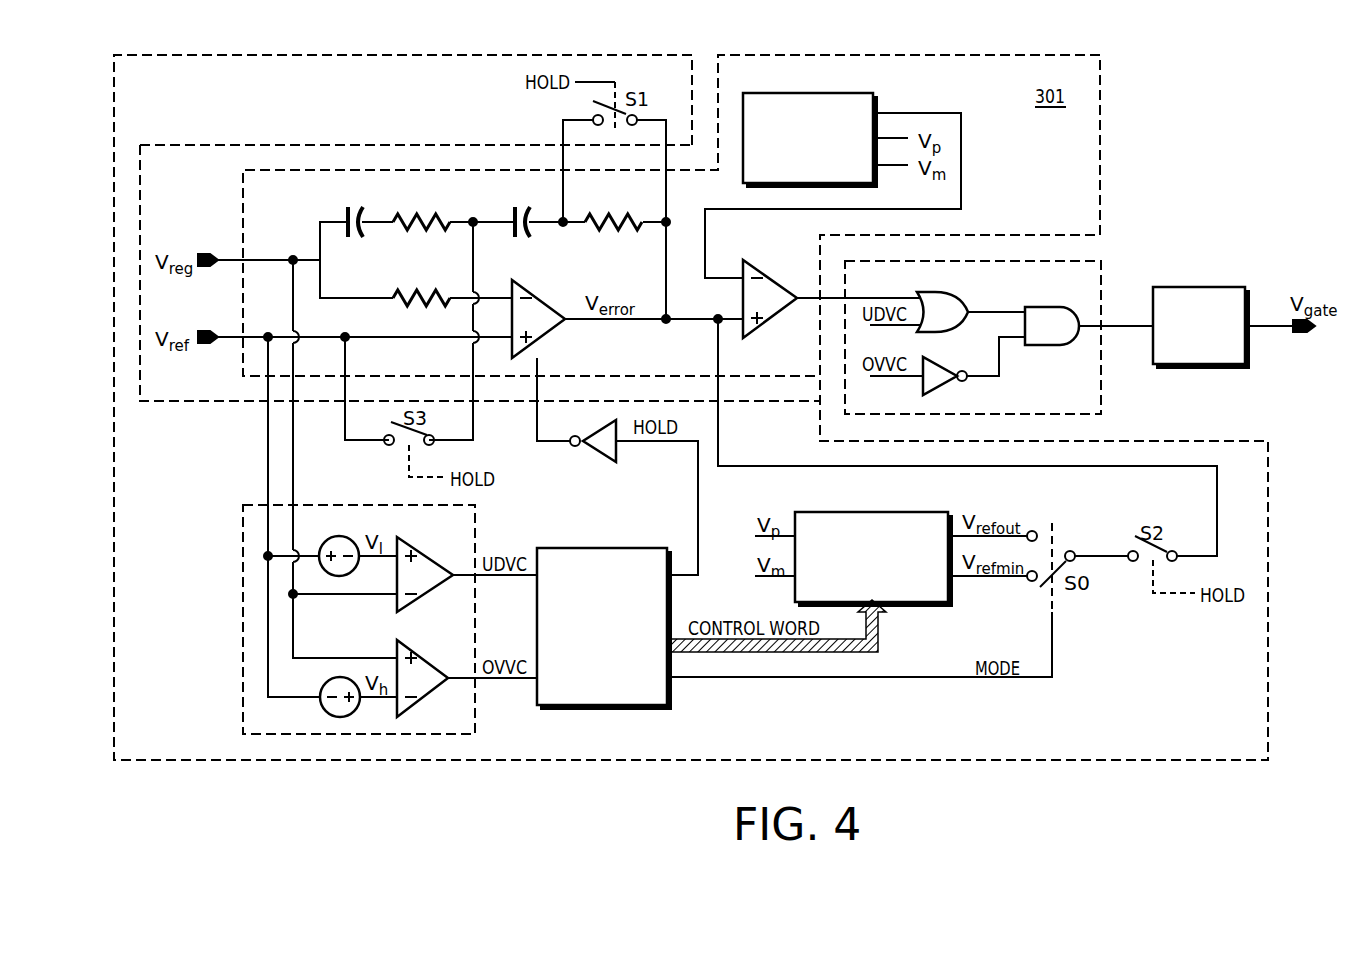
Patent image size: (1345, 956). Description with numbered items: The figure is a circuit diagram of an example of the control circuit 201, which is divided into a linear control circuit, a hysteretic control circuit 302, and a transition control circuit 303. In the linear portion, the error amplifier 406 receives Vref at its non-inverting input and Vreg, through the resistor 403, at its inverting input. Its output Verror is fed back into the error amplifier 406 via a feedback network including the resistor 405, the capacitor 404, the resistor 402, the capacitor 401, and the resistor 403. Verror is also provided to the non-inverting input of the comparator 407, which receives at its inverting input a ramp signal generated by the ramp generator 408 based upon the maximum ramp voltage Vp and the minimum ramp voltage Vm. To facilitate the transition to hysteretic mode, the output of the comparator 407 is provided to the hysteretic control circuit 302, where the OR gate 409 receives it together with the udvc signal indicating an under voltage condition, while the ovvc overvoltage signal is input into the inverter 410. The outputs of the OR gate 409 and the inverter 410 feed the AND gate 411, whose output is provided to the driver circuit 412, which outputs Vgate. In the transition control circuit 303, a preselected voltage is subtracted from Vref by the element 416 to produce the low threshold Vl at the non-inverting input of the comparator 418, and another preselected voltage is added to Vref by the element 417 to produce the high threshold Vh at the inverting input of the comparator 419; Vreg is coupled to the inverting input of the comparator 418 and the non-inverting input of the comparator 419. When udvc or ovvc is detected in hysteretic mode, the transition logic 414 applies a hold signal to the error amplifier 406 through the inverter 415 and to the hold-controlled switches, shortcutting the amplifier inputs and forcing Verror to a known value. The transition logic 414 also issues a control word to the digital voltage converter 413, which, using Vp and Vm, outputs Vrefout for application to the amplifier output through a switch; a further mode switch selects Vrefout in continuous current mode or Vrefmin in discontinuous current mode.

The control circuit 201 is at (1188, 795).
The hysteretic control circuit 302 is at (1078, 403).
The transition control circuit 303 is at (193, 728).
The capacitor 401 is at (346, 206).
The resistor 402 is at (436, 213).
The resistor 403 is at (436, 289).
The capacitor 404 is at (513, 206).
The resistor 405 is at (606, 213).
The error amplifier 406 is at (546, 291).
The comparator 407 is at (781, 272).
The ramp generator 408 is at (818, 93).
The OR gate 409 is at (946, 293).
The inverter 410 is at (950, 387).
The AND gate 411 is at (1040, 307).
The driver circuit 412 is at (1210, 287).
The digital voltage converter 413 is at (930, 604).
The transition logic 414 is at (616, 676).
The inverter 415 is at (600, 463).
The element 416 is at (330, 540).
The element 417 is at (322, 689).
The comparator 418 is at (428, 544).
The comparator 419 is at (430, 648).